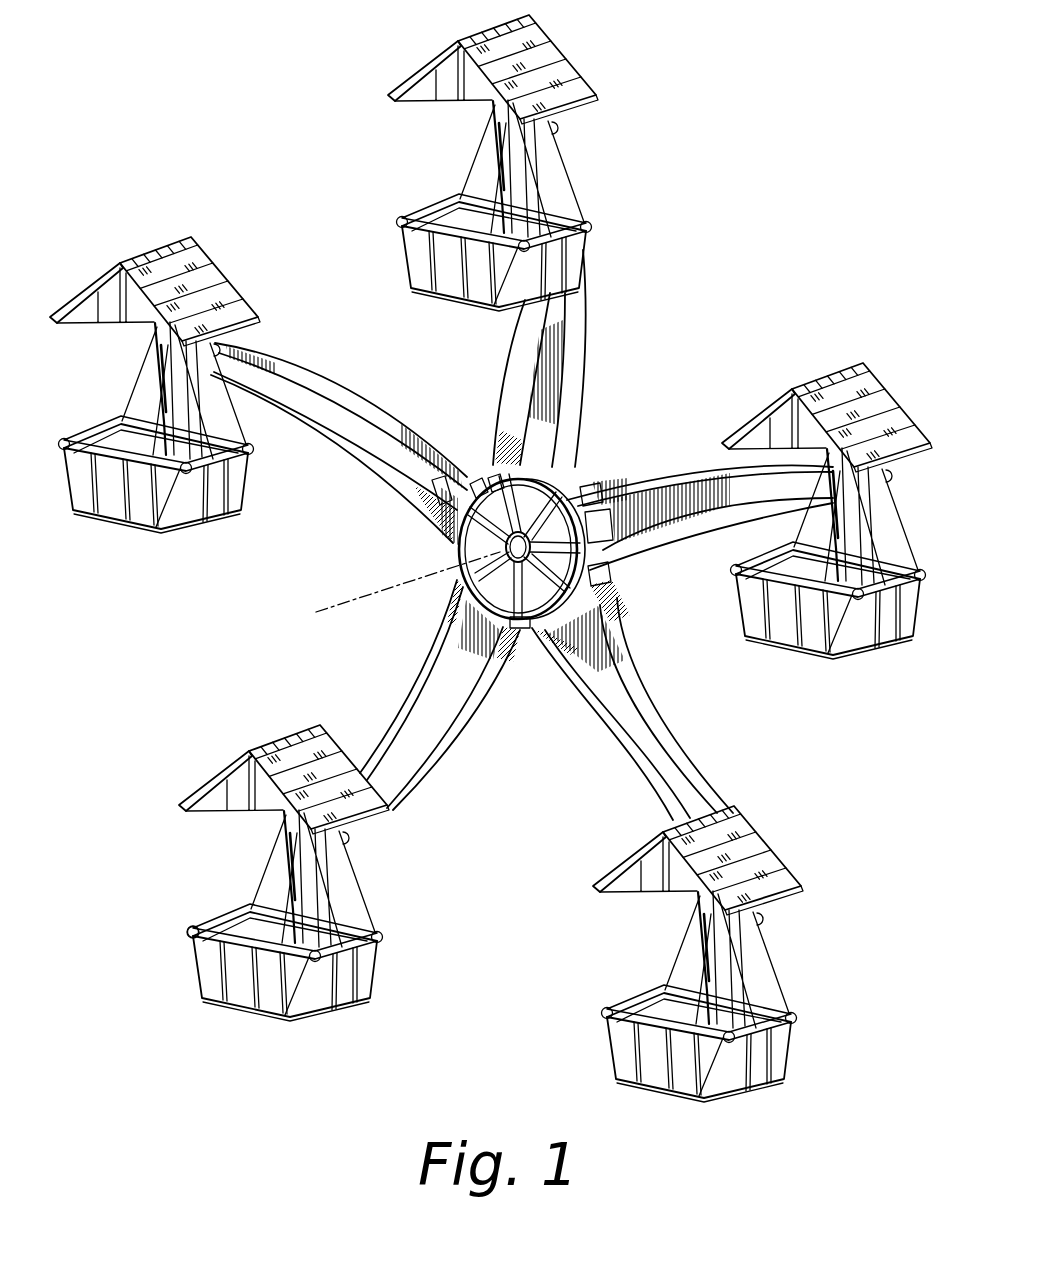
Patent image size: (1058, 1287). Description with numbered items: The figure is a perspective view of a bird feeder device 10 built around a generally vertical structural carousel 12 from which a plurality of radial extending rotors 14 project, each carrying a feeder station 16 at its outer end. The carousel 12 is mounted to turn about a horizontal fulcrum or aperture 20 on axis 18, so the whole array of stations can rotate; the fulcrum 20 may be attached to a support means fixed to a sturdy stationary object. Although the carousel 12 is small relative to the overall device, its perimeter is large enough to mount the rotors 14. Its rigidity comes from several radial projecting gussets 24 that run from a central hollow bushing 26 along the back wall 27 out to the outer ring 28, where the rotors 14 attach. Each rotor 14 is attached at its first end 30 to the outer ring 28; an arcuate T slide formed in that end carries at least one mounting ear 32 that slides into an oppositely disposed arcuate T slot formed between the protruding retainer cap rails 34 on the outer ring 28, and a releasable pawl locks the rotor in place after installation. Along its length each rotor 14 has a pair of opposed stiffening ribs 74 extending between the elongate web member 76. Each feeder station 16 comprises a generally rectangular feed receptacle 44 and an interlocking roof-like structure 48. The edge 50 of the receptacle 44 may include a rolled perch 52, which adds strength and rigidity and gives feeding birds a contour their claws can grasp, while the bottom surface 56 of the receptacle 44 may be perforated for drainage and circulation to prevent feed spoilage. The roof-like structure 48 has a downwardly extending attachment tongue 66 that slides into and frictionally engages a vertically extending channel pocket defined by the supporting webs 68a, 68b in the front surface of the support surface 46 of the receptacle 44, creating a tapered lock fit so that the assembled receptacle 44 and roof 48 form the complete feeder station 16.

The bird feeder device 10 is at (491, 558).
The vertical structural carousel 12 is at (505, 537).
The radial extending rotors 14 is at (580, 382).
The feeder stations 16 is at (221, 873).
The axis 18 is at (408, 597).
The horizontal fulcrum or aperture 20 is at (480, 553).
The radial projecting gussets 24 is at (610, 578).
The central hollow bushing 26 is at (523, 629).
The back wall 27 is at (493, 482).
The outer ring 28 is at (476, 485).
The first end 30 is at (435, 490).
The mounting ear 32 is at (600, 488).
The retainer cap rails 34 is at (612, 527).
The feed receptacle 44 is at (285, 978).
The support surface 46 is at (313, 878).
The roof-like structure 48 is at (284, 779).
The edge 50 is at (285, 933).
The rolled perch 52 is at (193, 932).
The bottom surface 56 is at (699, 1043).
The attachment tongue 66 is at (729, 959).
The supporting web 68a is at (771, 962).
The supporting web 68b is at (682, 943).
The stiffening ribs 74 is at (668, 695).
The elongate web member 76 is at (333, 398).